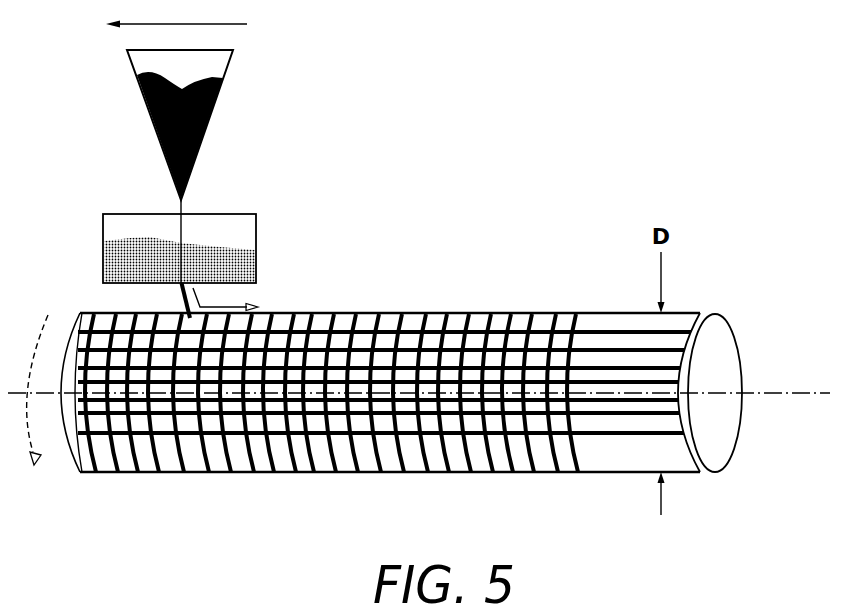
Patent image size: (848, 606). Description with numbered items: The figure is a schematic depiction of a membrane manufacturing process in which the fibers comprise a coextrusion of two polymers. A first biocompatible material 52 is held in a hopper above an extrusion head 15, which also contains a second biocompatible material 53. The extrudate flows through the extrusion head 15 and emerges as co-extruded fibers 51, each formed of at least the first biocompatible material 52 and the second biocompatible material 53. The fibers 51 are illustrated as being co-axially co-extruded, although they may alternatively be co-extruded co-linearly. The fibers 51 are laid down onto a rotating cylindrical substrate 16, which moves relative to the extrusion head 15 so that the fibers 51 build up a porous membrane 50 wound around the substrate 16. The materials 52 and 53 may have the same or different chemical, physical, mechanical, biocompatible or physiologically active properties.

The first biocompatible material 52 is at (215, 120).
The extrusion head 15 is at (103, 232).
The second biocompatible material 53 is at (240, 257).
The co-extruded fibers 51 is at (182, 298).
The membrane 50 is at (285, 440).
The substrate 16 is at (718, 427).